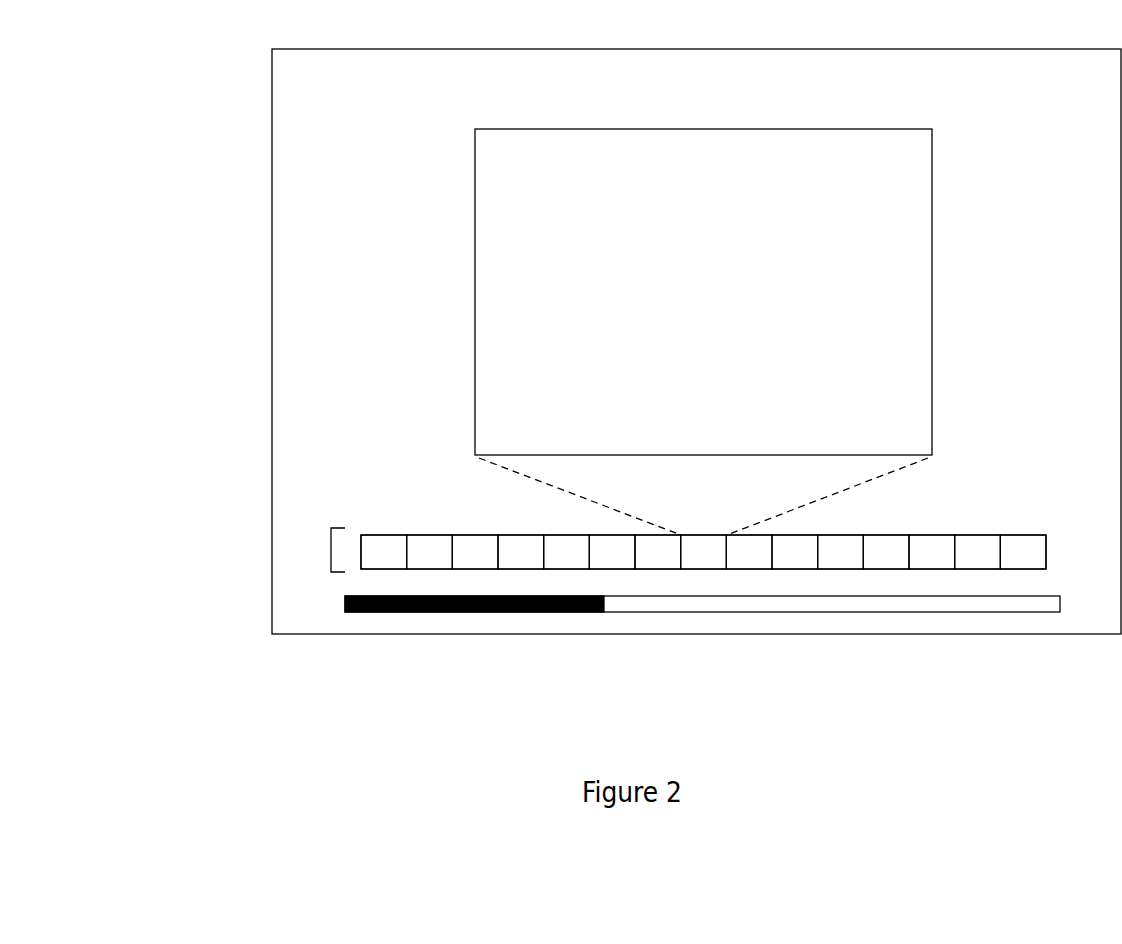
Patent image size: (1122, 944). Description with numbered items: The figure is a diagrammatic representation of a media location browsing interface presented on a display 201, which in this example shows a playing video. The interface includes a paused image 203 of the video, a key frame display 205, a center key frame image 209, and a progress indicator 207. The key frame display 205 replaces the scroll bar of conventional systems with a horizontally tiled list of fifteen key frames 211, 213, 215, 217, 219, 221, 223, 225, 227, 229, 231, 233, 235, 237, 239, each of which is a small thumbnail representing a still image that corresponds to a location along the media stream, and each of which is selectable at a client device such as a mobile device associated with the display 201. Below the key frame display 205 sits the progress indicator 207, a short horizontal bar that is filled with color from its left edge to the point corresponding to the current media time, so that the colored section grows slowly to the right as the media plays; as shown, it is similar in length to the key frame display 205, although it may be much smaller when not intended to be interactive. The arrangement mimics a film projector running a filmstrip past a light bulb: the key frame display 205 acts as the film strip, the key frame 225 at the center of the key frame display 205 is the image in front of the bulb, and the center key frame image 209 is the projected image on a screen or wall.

The display 201 is at (270, 92).
The paused image 203 is at (315, 258).
The key frame display 205 is at (596, 550).
The progress indicator 207 is at (343, 606).
The center key frame image 209 is at (841, 218).
The key frame 211 is at (399, 560).
The key frame 213 is at (414, 560).
The key frame 215 is at (460, 560).
The key frame 217 is at (536, 560).
The key frame 219 is at (582, 560).
The key frame 221 is at (597, 560).
The key frame 223 is at (673, 560).
The key frame 225 is at (688, 560).
The key frame 227 is at (734, 560).
The key frame 229 is at (810, 560).
The key frame 231 is at (856, 560).
The key frame 233 is at (871, 560).
The key frame 235 is at (947, 560).
The key frame 237 is at (962, 560).
The key frame 239 is at (1008, 560).